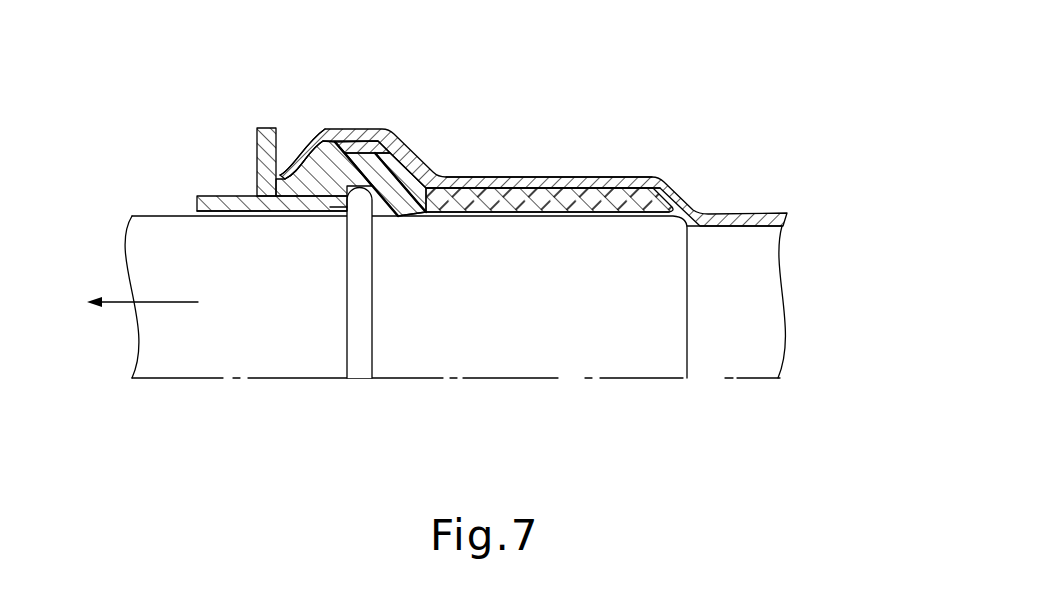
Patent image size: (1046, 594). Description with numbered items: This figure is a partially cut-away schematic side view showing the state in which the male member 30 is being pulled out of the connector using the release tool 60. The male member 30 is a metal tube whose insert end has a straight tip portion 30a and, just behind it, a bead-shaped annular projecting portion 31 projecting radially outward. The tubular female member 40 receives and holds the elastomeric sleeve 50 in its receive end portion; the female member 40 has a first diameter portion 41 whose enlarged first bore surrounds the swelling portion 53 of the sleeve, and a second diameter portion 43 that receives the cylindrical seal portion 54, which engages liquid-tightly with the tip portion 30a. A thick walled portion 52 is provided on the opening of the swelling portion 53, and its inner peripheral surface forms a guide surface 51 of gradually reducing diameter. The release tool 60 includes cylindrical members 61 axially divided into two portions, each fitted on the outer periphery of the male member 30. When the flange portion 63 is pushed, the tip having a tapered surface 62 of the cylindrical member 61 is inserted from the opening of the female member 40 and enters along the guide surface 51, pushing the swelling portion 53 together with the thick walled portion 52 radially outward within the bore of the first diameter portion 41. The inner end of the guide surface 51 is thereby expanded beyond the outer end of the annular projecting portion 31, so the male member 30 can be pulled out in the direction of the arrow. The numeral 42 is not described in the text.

The male member 30 is at (405, 296).
The tip portion 30a is at (567, 362).
The annular projecting portion 31 is at (356, 365).
The female member 40 is at (533, 133).
The first diameter portion 41 is at (383, 127).
The bent flap of sheet 42 is at (282, 170).
The second diameter portion 43 is at (552, 176).
The elastomeric sleeve 50 is at (435, 188).
The guide surface 51 is at (307, 215).
The thick walled portion 52 is at (358, 127).
The swelling portion 53 is at (412, 150).
The seal portion 54 is at (565, 213).
The release tool 60 is at (248, 174).
The cylindrical member 61 is at (213, 195).
The tapered surface 62 is at (330, 207).
The flange portion 63 is at (267, 127).